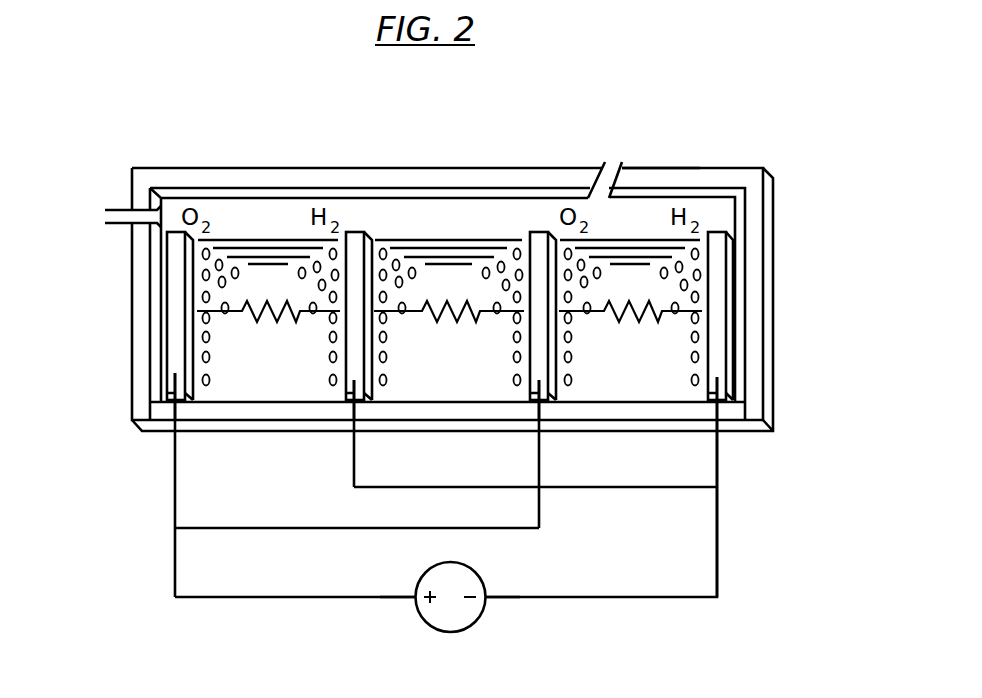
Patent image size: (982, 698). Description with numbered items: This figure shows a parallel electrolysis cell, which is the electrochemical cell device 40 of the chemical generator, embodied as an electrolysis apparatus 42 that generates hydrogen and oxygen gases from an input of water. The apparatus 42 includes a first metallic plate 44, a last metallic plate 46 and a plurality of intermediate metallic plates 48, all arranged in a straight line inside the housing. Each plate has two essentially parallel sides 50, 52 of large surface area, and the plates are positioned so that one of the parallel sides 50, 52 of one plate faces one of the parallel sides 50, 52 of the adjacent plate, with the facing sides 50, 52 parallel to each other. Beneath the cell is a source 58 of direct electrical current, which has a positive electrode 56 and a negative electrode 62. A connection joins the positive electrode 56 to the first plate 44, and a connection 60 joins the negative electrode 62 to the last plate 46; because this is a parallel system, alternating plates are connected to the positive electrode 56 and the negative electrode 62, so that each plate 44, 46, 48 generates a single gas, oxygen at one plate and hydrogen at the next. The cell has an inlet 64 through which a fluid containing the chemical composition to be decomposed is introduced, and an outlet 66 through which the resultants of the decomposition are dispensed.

The electrochemical cell device 40 is at (372, 165).
The electrolysis apparatus 42 is at (638, 167).
The first metallic plate 44 is at (175, 237).
The last metallic plate 46 is at (716, 237).
The intermediate metallic plate 48 is at (354, 226).
The parallel side 50 is at (345, 259).
The parallel side 52 is at (381, 240).
The positive electrode 56 is at (418, 582).
The source of direct electrical current 58 is at (472, 624).
The connection 60 is at (728, 376).
The negative electrode 62 is at (483, 582).
The inlet 64 is at (113, 208).
The outlet 66 is at (605, 163).